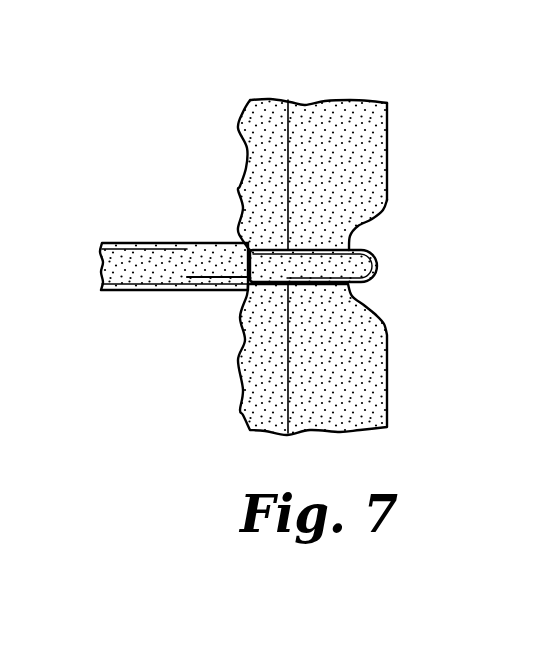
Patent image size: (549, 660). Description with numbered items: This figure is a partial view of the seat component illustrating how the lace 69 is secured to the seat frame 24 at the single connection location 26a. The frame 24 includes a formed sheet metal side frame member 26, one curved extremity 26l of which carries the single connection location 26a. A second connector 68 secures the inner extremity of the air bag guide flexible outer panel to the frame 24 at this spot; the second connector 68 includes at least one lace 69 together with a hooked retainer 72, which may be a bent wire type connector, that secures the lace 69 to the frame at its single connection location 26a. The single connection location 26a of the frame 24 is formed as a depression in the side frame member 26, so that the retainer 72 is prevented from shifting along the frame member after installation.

The frame 24 is at (410, 121).
The side frame member 26 is at (232, 181).
The curved extremity of side frame member 26l is at (400, 171).
The single connection location 26a is at (362, 234).
The second connector 68 is at (400, 265).
The hooked retainer 72 is at (376, 278).
The lace 69 is at (202, 277).